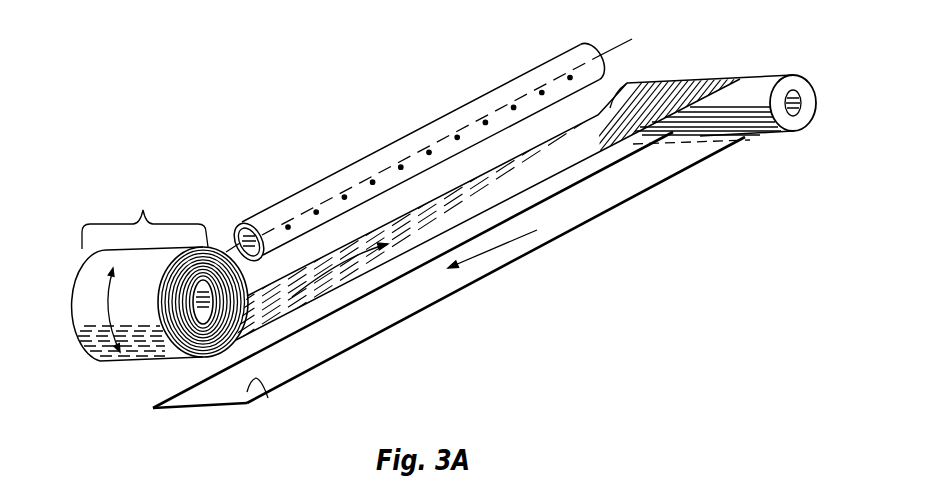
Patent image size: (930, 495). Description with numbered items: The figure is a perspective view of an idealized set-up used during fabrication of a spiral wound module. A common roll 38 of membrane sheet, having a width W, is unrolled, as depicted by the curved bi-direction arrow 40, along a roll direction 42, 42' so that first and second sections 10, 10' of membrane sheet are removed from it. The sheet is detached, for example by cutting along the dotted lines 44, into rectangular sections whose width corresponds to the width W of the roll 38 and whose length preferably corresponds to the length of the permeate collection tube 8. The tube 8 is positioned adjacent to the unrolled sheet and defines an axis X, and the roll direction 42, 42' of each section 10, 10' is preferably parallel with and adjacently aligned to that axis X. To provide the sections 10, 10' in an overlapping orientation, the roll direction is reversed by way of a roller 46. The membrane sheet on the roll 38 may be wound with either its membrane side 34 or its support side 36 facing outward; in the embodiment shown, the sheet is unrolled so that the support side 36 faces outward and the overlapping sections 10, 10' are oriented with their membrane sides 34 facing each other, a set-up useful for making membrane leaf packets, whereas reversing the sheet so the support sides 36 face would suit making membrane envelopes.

The permeate collection tube 8 is at (413, 132).
The first section of membrane sheet 10 is at (491, 174).
The second section of membrane sheet 10' is at (449, 270).
The membrane side 34 is at (268, 398).
The support side 36 is at (192, 409).
The roll 38 is at (82, 268).
The curved bi-direction arrow 40 is at (104, 308).
The roll direction 42 is at (396, 292).
The roll direction 42' is at (523, 262).
The dotted lines 44 is at (610, 106).
The roller 46 is at (776, 74).
The axis X is at (617, 46).
The width W is at (145, 213).